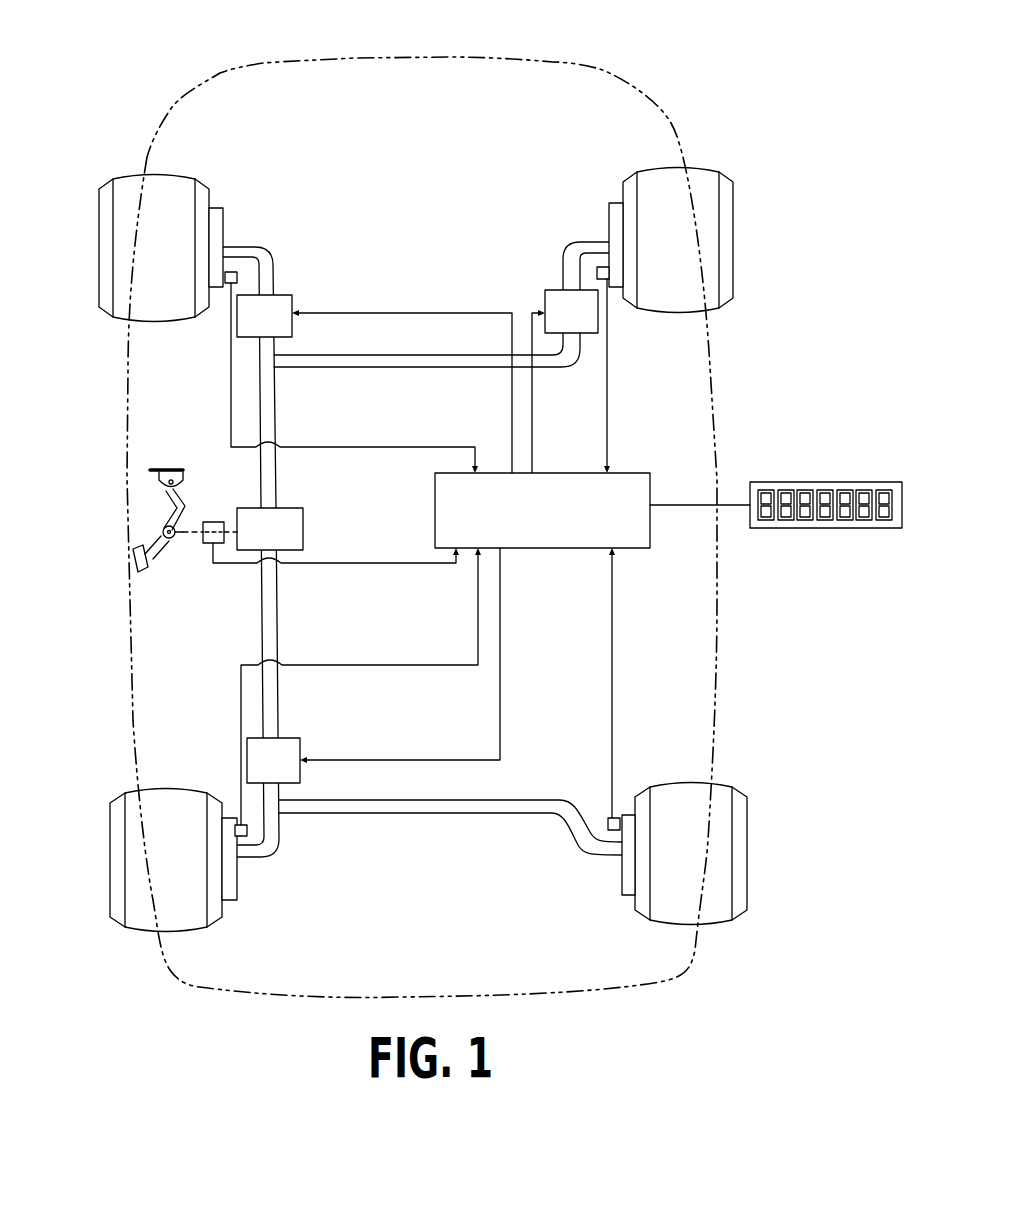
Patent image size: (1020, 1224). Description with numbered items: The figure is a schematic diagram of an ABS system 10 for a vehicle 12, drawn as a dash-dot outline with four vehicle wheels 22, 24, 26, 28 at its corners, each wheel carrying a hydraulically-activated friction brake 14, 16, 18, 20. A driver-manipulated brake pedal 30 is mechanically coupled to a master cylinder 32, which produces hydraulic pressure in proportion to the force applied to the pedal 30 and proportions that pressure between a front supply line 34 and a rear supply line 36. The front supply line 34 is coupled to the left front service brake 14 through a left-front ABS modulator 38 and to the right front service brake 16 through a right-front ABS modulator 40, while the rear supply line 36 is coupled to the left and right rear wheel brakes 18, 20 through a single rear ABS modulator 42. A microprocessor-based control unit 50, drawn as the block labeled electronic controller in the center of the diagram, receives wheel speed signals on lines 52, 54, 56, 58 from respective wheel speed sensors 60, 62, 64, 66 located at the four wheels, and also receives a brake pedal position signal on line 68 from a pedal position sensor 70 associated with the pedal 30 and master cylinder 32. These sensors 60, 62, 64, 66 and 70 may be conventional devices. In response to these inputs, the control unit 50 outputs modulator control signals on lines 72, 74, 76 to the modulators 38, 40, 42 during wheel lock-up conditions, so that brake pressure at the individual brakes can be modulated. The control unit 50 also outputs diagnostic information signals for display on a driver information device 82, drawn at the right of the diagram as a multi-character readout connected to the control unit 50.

The ABS system 10 is at (356, 146).
The vehicle 12 is at (678, 109).
The left front service brake 14 is at (216, 208).
The right front service brake 16 is at (619, 205).
The left rear wheel brake 18 is at (238, 890).
The right rear wheel brake 20 is at (628, 885).
The vehicle wheel 22 is at (100, 240).
The vehicle wheel 24 is at (733, 235).
The vehicle wheel 26 is at (112, 860).
The vehicle wheel 28 is at (748, 845).
The brake pedal 30 is at (164, 552).
The master cylinder 32 is at (303, 525).
The front supply line 34 is at (266, 420).
The rear supply line 36 is at (268, 612).
The left-front ABS modulator 38 is at (293, 303).
The right-front ABS modulator 40 is at (545, 303).
The rear ABS modulator 42 is at (301, 752).
The control unit 50 is at (632, 473).
The wheel speed signal line 52 is at (232, 420).
The wheel speed signal line 54 is at (608, 415).
The wheel speed signal line 56 is at (360, 664).
The wheel speed signal line 58 is at (612, 665).
The wheel speed sensor 60 is at (230, 285).
The wheel speed sensor 62 is at (606, 282).
The wheel speed sensor 64 is at (238, 822).
The wheel speed sensor 66 is at (619, 816).
The pedal position signal line 68 is at (360, 562).
The pedal position sensor 70 is at (216, 522).
The modulator control signal line 72 is at (513, 348).
The modulator control signal line 74 is at (535, 405).
The modulator control signal line 76 is at (503, 705).
The driver information device 82 is at (832, 482).